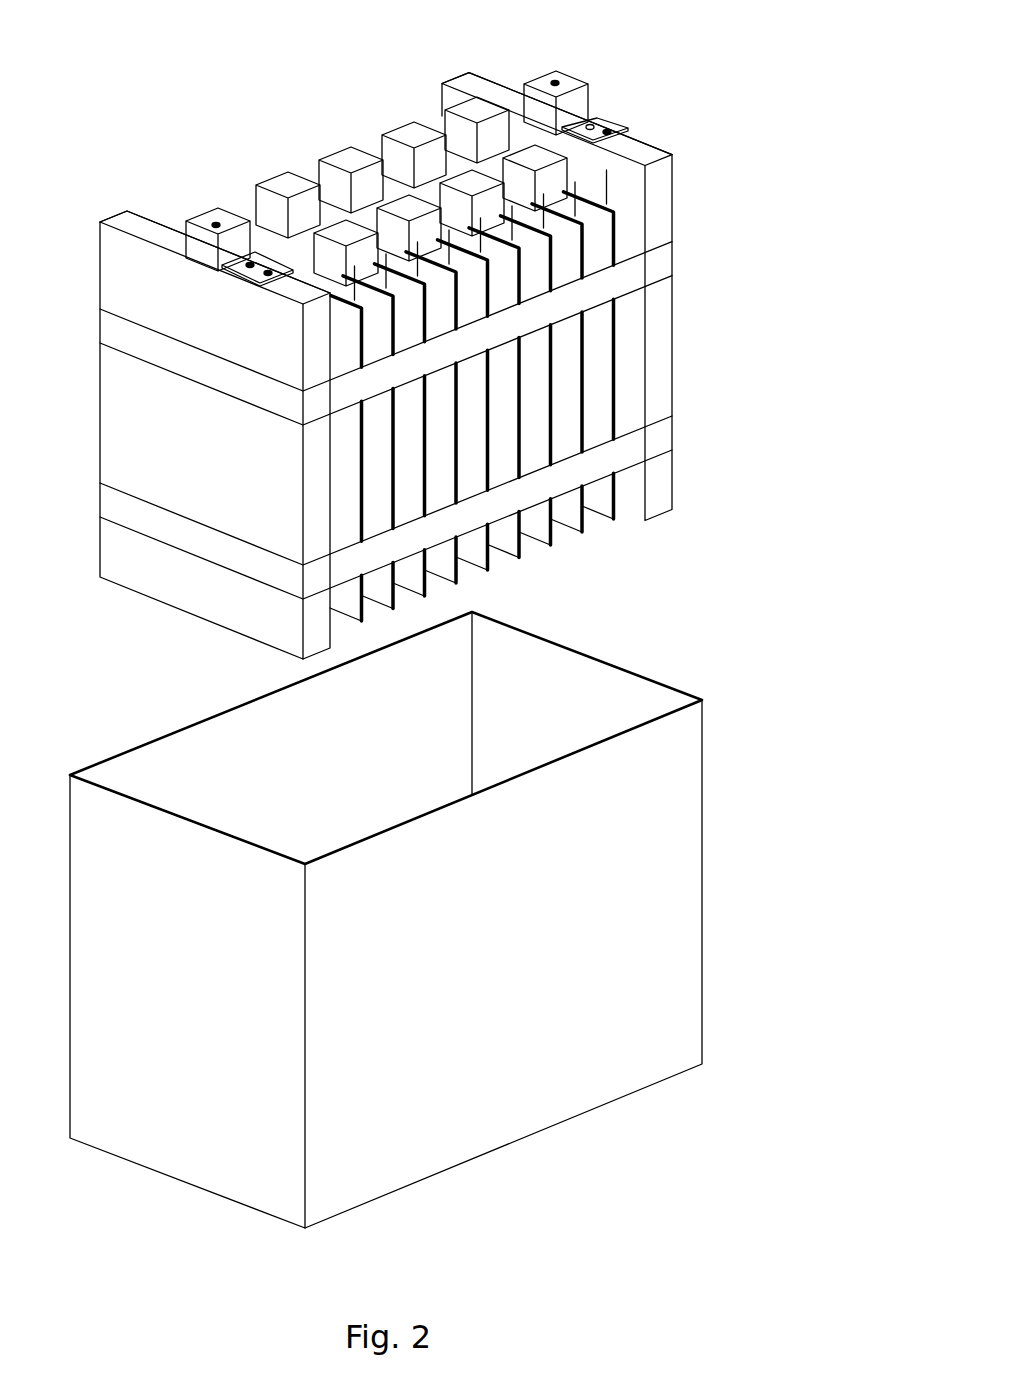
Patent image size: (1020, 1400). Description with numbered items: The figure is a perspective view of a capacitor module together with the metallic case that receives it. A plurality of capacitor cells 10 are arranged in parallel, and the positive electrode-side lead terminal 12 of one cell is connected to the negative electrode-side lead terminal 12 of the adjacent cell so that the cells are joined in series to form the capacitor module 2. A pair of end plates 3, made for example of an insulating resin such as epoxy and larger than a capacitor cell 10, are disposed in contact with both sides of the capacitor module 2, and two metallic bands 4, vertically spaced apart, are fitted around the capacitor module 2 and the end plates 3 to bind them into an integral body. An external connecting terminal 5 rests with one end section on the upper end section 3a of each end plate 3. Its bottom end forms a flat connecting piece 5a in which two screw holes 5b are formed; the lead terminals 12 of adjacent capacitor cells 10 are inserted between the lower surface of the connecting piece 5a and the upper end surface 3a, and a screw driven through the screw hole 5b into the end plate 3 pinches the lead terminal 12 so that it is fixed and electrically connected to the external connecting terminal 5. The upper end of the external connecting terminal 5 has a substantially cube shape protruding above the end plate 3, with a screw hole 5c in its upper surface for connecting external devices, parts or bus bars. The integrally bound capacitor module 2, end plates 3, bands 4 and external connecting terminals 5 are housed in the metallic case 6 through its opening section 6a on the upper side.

The capacitor module 2 is at (245, 192).
The end plate 3 is at (662, 328).
The upper end section of the end plate 3a is at (125, 212).
The metallic band 4 is at (135, 340).
The external connecting terminal 5 is at (578, 64).
The connecting piece 5a is at (250, 286).
The screw hole 5b is at (594, 124).
The screw hole 5c is at (553, 80).
The metallic case 6 is at (386, 920).
The opening section 6a is at (136, 760).
The capacitor cell 10 is at (530, 575).
The lead terminal 12 is at (410, 132).